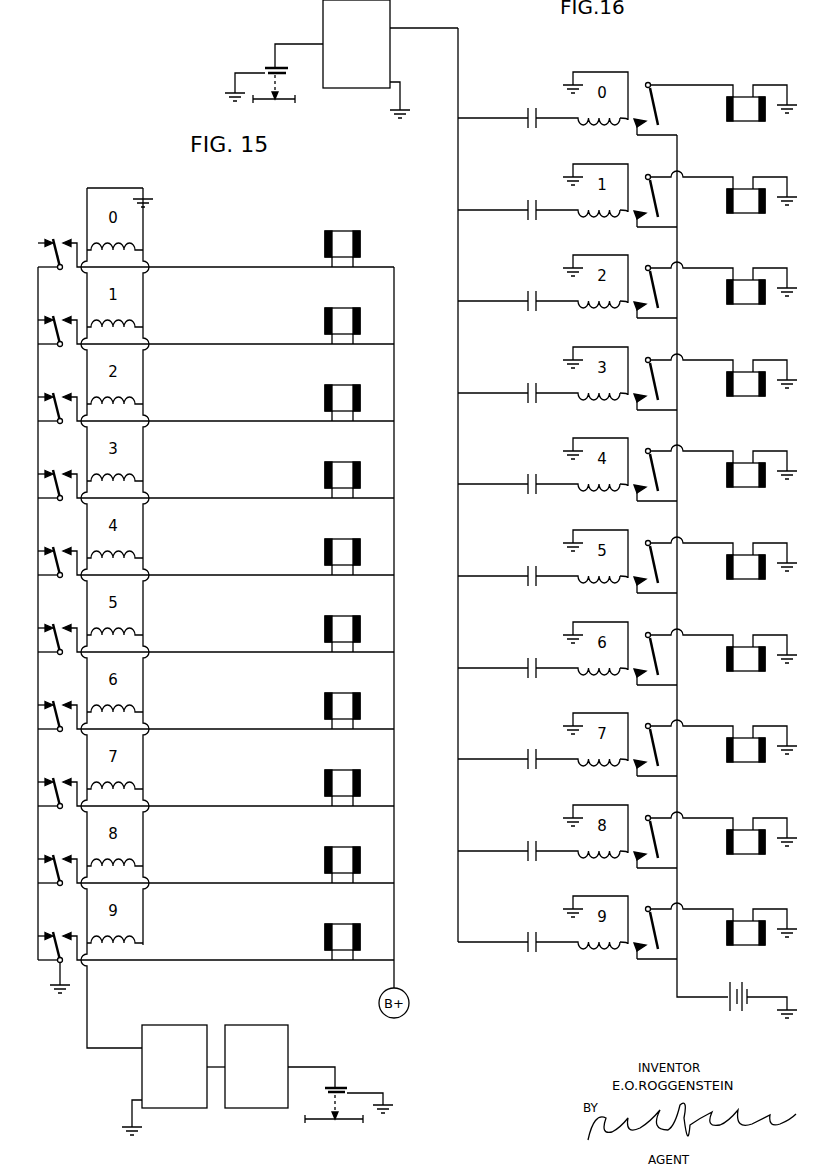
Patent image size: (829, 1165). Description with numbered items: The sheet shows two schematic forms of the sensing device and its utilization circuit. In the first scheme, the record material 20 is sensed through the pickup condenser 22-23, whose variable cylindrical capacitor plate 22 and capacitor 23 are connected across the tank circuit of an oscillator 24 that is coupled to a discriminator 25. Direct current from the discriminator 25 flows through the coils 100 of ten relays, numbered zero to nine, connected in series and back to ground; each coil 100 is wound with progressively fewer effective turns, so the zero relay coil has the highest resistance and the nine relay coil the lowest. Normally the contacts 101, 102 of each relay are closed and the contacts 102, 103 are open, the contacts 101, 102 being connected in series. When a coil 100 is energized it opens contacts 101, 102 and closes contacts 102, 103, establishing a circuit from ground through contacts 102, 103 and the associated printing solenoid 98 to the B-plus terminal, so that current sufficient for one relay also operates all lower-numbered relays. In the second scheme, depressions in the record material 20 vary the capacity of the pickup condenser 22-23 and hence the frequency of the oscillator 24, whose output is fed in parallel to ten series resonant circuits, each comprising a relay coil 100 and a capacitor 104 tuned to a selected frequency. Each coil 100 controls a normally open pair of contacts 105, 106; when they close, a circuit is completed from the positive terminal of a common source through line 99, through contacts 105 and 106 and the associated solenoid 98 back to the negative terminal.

In FIG. 15, the record material 20 is at (283, 101).
In FIG. 15, the pickup condenser 22-23 is at (237, 63).
In FIG. 15, the variable cylindrical capacitor plate 22 is at (237, 63).
In FIG. 15, the capacitor 23 is at (265, 70).
In FIG. 15, the oscillator 24 is at (383, 12).
In FIG. 15, the discriminator 25 is at (153, 1100).
In FIG. 15, the printing solenoid 98 is at (345, 258).
In FIG. 16, the printing solenoid 98 is at (735, 122).
In FIG. 16, the line 99 is at (679, 171).
In FIG. 15, the relay coil 100 is at (131, 246).
In FIG. 16, the relay coil 100 is at (596, 128).
In FIG. 15, the contact 101 is at (50, 245).
In FIG. 15, the contact 102 is at (62, 268).
In FIG. 15, the contact 103 is at (66, 240).
In FIG. 16, the capacitor 104 is at (525, 116).
In FIG. 16, the contact 105 is at (642, 516).
In FIG. 16, the contact 106 is at (658, 115).